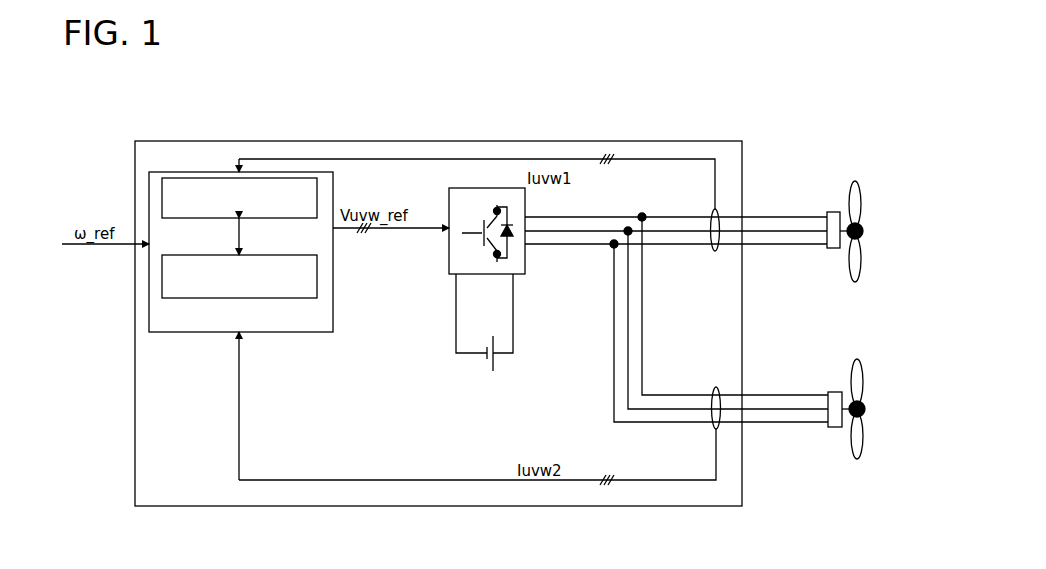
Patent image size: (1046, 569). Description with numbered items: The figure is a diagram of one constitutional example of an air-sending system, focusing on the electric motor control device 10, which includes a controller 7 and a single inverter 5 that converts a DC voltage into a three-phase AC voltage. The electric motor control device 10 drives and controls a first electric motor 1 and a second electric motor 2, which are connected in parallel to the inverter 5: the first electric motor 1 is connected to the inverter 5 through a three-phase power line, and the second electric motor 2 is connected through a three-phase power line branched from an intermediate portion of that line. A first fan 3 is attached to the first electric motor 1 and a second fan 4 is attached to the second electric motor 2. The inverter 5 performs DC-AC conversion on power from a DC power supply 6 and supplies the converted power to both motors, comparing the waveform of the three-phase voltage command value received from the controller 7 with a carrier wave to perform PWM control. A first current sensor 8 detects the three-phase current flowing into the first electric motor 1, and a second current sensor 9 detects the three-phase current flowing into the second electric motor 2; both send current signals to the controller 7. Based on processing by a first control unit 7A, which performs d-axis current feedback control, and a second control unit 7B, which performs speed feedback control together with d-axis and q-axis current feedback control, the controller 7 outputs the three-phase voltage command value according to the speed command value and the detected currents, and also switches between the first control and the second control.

The first electric motor 1 is at (826, 212).
The second electric motor 2 is at (828, 392).
The first fan 3 is at (859, 183).
The second fan 4 is at (861, 361).
The inverter 5 is at (527, 274).
The DC power supply 6 is at (493, 336).
The controller 7 is at (193, 332).
The first control unit 7A is at (276, 218).
The second control unit 7B is at (276, 298).
The first current sensor 8 is at (717, 250).
The second current sensor 9 is at (713, 390).
The electric motor control device 10 is at (690, 506).